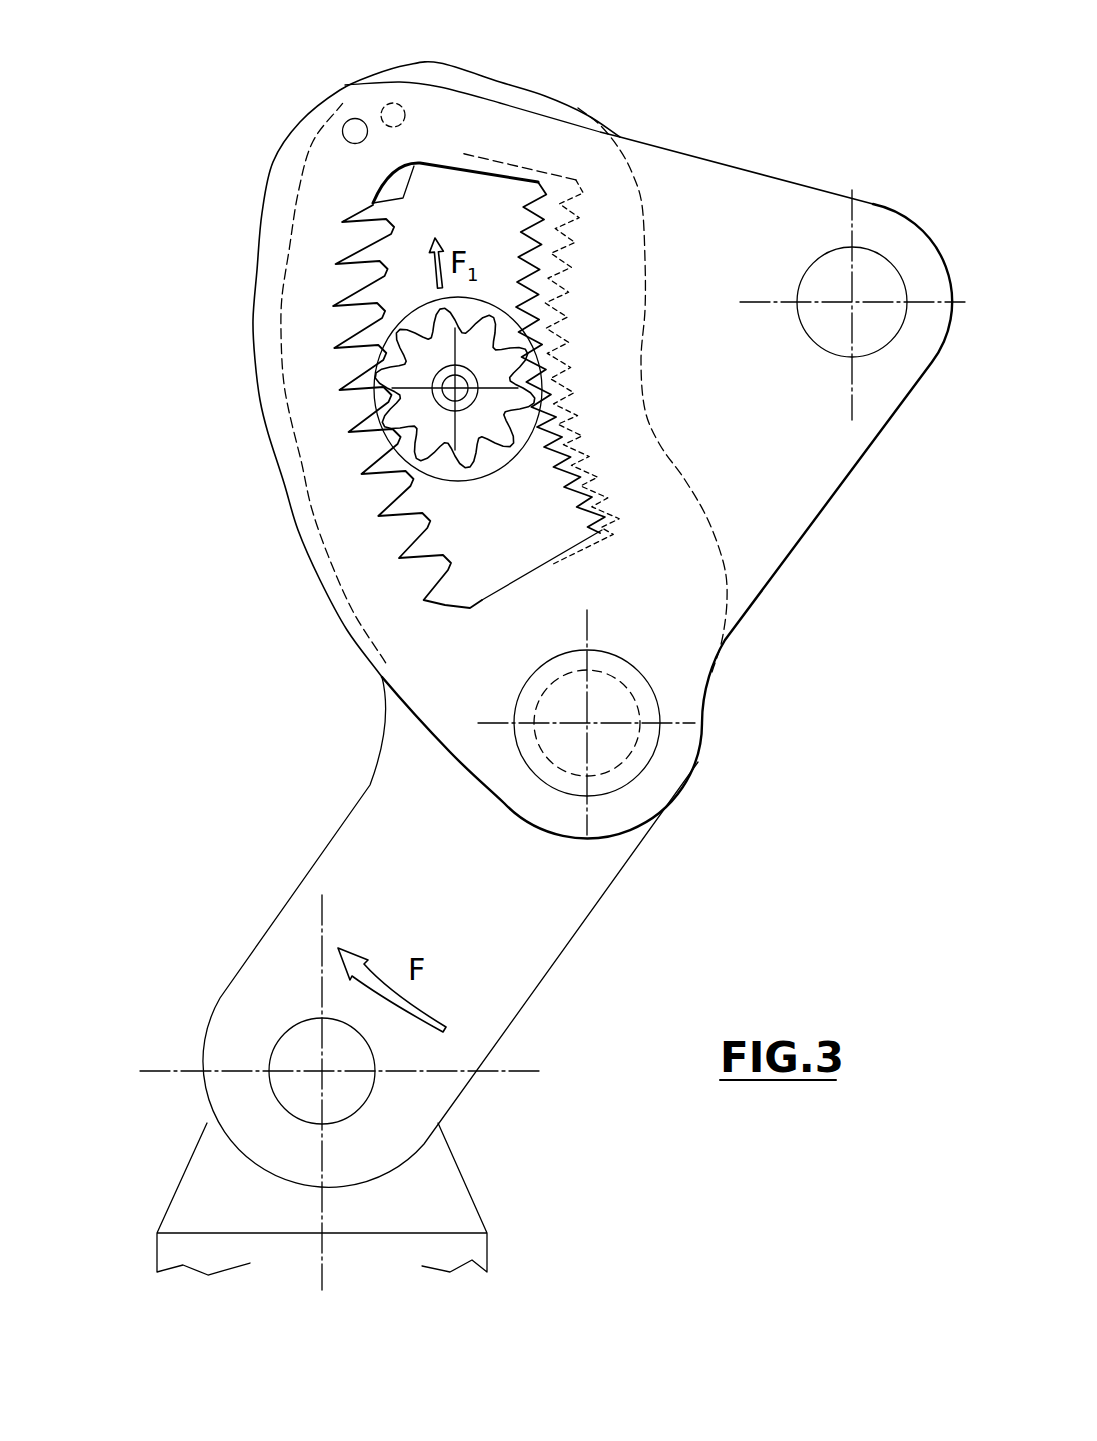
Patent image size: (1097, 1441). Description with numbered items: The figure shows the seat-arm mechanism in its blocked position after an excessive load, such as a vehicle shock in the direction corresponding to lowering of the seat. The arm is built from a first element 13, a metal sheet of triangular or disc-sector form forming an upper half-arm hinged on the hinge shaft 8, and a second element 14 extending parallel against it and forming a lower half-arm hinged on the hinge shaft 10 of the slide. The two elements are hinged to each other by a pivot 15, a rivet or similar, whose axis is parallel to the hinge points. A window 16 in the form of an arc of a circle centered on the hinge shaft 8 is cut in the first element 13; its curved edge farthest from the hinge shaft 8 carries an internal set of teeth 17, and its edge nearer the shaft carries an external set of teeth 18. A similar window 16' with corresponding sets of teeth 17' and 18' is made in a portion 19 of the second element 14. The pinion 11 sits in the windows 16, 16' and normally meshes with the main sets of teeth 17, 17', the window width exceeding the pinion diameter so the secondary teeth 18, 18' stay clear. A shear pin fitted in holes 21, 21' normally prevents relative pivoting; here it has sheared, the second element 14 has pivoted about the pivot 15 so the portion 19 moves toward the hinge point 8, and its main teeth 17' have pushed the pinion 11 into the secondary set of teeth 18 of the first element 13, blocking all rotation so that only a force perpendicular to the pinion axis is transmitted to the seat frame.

The hinge shaft 8 is at (873, 280).
The hinge shaft of the slide 10 is at (298, 1043).
The pinion 11 is at (465, 453).
The first element 13 is at (700, 175).
The second element 14 is at (400, 810).
The pivot 15 is at (607, 740).
The window 16 is at (522, 303).
The window 16' is at (504, 370).
The internal set of teeth 17 is at (356, 406).
The internal set of teeth 17' is at (455, 192).
The external set of teeth 18 is at (560, 357).
The external set of teeth 18' is at (585, 373).
The portion of the second element 19 is at (510, 97).
The hole 21 is at (299, 108).
The hole 21' is at (360, 71).